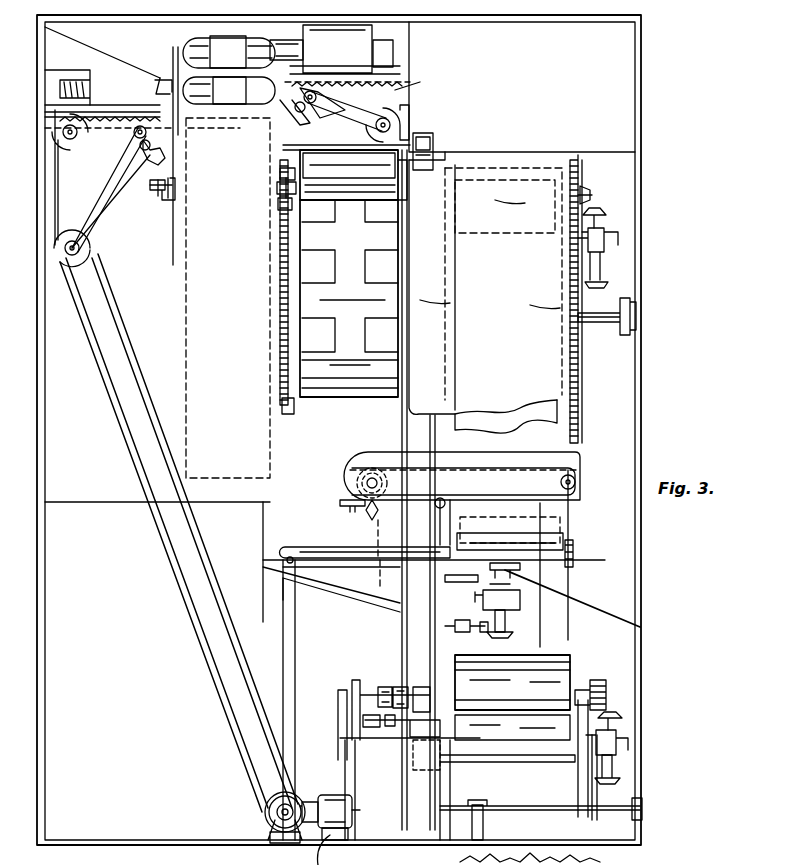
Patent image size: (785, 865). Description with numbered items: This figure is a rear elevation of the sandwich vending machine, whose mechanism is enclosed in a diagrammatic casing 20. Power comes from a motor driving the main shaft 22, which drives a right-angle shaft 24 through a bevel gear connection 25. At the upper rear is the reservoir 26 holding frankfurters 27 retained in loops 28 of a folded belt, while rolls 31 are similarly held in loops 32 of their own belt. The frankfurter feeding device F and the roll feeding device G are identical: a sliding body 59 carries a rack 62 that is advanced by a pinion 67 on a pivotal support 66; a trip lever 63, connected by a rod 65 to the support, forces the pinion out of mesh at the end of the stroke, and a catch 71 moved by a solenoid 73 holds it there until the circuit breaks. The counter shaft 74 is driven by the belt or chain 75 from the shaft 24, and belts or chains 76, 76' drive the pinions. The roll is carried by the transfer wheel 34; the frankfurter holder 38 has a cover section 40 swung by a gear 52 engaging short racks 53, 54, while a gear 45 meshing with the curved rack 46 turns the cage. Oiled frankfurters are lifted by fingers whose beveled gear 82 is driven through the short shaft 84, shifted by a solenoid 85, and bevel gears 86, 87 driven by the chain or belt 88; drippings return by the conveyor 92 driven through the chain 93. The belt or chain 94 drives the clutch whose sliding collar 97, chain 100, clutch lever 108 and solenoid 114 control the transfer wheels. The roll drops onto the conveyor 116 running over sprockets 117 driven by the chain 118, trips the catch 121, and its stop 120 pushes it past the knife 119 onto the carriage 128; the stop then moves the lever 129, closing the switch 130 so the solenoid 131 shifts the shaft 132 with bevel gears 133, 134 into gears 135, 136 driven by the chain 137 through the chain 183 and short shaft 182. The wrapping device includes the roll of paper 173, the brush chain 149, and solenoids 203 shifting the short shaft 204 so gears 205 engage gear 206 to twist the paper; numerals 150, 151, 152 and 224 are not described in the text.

The casing 20 is at (45, 590).
The main shaft 22 is at (520, 807).
The shaft 24 is at (265, 818).
The bevel gear connection 25 is at (310, 806).
The reservoir 26 is at (228, 298).
The frankfurters 27 is at (199, 104).
The loops 28 is at (221, 104).
The rolls 31 is at (178, 46).
The loops 32 is at (229, 52).
The wheel 34 is at (349, 298).
The holder 38 is at (445, 186).
The cover section 40 is at (353, 175).
The gear 45 is at (277, 188).
The curved rack 46 is at (278, 272).
The gear 52 is at (280, 172).
The short rack 53 is at (278, 204).
The short rack 54 is at (296, 412).
The sliding body 59 is at (118, 116).
The rack 62 is at (112, 122).
The trip lever 63 is at (160, 64).
The rod 65 is at (226, 140).
The pivotal support 66 is at (150, 160).
The pinion 67 is at (314, 90).
The catch 71 is at (150, 192).
The solenoid 73 is at (175, 190).
The counter shaft 74 is at (90, 252).
The belt or chain 75 is at (86, 175).
The belt or chain 76 is at (109, 190).
The chain 76' is at (240, 170).
The beveled gear 82 is at (592, 190).
The short shaft 84 is at (600, 222).
The solenoid 85 is at (598, 254).
The bevel gear 86 is at (598, 280).
The bevel gear 87 is at (578, 264).
The chain or belt 88 is at (582, 407).
The conveyor 92 is at (436, 140).
The chain or belt 93 is at (402, 425).
The belt or chain 94 is at (355, 776).
The sliding collar 97 is at (402, 688).
The chain 100 is at (432, 628).
The clutch lever 108 is at (395, 733).
The solenoid 114 is at (382, 732).
The conveyor 116 is at (300, 546).
The sprockets 117 is at (424, 572).
The chain 118 is at (296, 640).
The knife 119 is at (438, 503).
The stop 120 is at (380, 580).
The catch 121 is at (345, 498).
The carriage 128 is at (552, 566).
The lever 129 is at (454, 582).
The switch 130 is at (470, 565).
The solenoid 131 is at (520, 600).
The shaft 132 is at (506, 618).
The bevel gear 133 is at (498, 578).
The bevel gear 134 is at (496, 638).
The gear 135 is at (520, 562).
The gear 136 is at (486, 634).
The chain 137 is at (476, 632).
The brush chain 149 is at (497, 476).
The stop 150 is at (324, 514).
The pivot 151 is at (448, 500).
The cam follower 152 is at (345, 525).
The roll of paper 173 is at (512, 697).
The short shaft 182 is at (502, 762).
The chain 183 is at (597, 790).
The solenoids 203 is at (620, 738).
The short shaft 204 is at (616, 762).
The gears 205 is at (610, 714).
The gear 206 is at (606, 690).
The base 224 is at (462, 850).
The feeding device F is at (102, 52).
The feeding device G is at (417, 82).